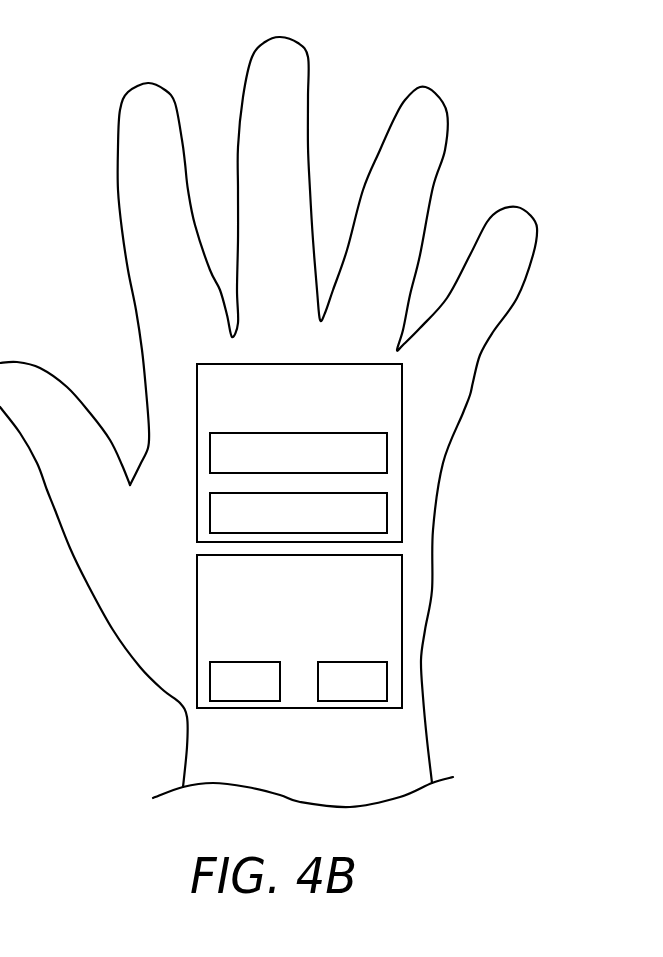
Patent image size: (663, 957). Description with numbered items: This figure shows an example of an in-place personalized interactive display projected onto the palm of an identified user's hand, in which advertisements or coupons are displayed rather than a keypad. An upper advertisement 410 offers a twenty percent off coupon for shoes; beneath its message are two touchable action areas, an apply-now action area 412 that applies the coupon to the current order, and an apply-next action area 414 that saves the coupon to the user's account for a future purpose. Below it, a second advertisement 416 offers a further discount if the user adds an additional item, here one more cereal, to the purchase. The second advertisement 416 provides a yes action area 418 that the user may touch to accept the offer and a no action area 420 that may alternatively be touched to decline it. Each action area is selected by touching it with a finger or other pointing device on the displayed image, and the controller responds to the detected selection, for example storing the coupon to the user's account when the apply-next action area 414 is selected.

The advertisement 410 is at (402, 402).
The action area 412 is at (387, 453).
The action area 414 is at (387, 513).
The advertisement 416 is at (402, 630).
The yes action area 418 is at (210, 682).
The no action area 420 is at (387, 680).